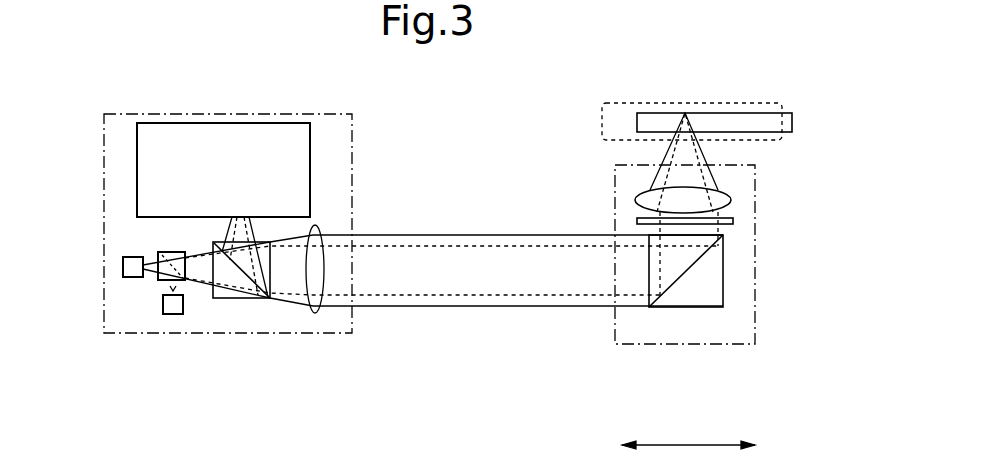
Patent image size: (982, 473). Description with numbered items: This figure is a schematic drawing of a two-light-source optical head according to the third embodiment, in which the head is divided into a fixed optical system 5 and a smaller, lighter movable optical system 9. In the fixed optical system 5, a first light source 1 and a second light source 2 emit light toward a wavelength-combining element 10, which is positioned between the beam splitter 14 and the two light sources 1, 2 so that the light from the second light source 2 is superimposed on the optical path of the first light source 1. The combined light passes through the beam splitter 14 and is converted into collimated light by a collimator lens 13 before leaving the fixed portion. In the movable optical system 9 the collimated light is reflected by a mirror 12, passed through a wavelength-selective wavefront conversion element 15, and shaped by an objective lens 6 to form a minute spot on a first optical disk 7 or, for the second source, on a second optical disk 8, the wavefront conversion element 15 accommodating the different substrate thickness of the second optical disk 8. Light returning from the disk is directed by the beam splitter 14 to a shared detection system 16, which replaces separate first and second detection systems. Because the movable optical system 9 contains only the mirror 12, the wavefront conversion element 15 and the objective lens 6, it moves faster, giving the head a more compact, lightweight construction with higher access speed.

The first light source 1 is at (123, 267).
The second light source 2 is at (173, 314).
The fixed optical system 5 is at (118, 333).
The objective lens 6 is at (733, 200).
The first optical disk 7 is at (792, 122).
The second optical disk 8 is at (622, 113).
The movable optical system 9 is at (665, 333).
The wavelength-combining element 10 is at (158, 252).
The mirror 12 is at (722, 296).
The collimator lens 13 is at (316, 313).
The beam splitter 14 is at (241, 299).
The wavelength-selective wavefront conversion element 15 is at (733, 222).
The shared detection system 16 is at (210, 123).